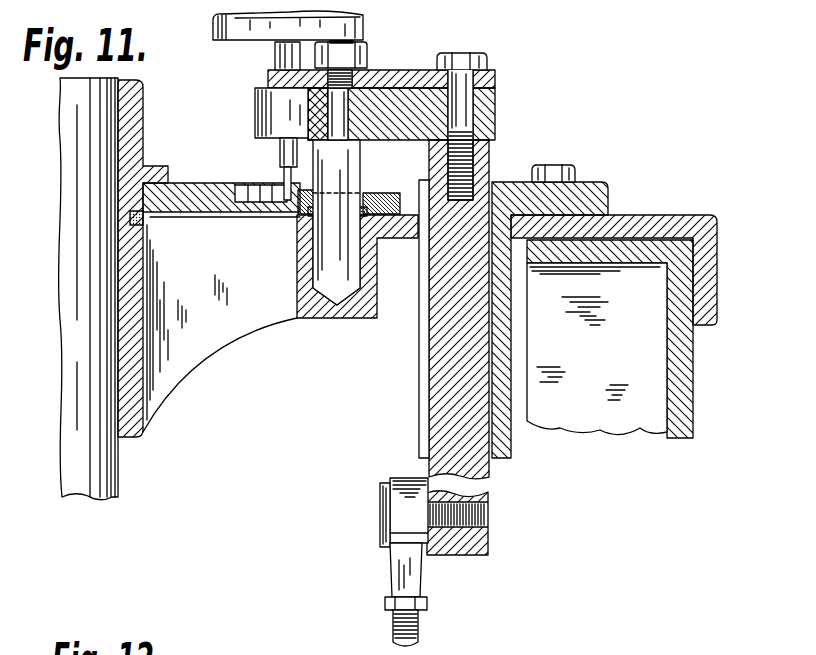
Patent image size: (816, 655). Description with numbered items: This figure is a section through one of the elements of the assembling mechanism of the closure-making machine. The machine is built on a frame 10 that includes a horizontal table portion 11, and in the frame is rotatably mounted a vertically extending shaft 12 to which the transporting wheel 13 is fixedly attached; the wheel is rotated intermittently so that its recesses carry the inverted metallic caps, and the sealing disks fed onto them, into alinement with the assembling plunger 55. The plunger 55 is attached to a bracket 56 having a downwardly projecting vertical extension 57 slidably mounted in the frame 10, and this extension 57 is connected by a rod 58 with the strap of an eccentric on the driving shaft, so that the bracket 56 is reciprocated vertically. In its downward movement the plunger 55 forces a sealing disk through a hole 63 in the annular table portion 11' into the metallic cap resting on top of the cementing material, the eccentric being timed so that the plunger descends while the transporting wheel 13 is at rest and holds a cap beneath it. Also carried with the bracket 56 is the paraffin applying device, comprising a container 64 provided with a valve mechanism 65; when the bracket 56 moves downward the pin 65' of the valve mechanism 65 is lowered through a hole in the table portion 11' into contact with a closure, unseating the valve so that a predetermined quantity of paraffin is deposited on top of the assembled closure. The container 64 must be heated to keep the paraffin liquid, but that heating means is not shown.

The frame 10 is at (683, 371).
The table portion 11 is at (604, 311).
The annular portion of the table 11' is at (357, 266).
The vertically extending shaft 12 is at (67, 348).
The transporting wheel 13 is at (189, 191).
The assembling plunger 55 is at (360, 176).
The bracket 56 is at (488, 116).
The vertical extension 57 is at (438, 362).
The rod 58 is at (418, 641).
The hole 63 is at (373, 191).
The container 64 is at (363, 28).
The valve mechanism 65 is at (274, 127).
The pin 65' is at (264, 181).